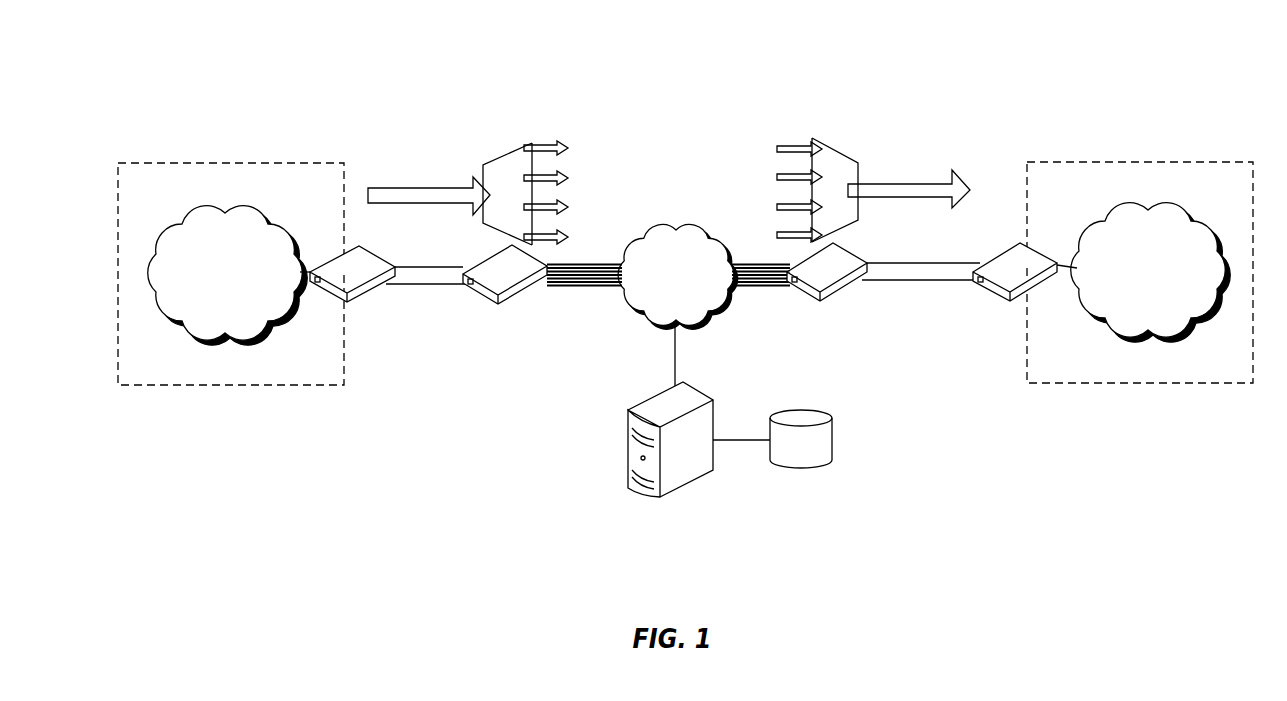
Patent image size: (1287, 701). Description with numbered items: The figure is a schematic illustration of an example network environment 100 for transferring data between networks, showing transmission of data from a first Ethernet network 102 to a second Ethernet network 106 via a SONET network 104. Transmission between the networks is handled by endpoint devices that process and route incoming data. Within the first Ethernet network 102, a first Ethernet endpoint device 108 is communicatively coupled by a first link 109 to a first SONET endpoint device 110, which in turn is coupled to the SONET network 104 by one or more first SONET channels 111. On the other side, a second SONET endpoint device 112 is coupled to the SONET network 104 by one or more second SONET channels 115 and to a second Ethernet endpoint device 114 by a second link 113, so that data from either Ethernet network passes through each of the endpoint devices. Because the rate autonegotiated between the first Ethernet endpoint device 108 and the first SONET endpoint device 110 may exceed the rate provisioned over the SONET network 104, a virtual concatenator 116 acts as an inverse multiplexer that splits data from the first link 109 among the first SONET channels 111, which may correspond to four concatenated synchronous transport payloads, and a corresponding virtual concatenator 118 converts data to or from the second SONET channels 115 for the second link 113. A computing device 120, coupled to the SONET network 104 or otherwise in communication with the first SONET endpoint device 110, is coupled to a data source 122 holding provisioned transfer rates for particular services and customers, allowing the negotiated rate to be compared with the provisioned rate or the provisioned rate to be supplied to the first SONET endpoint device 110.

The network environment 100 is at (1008, 78).
The first Ethernet network 102 is at (235, 163).
The SONET network 104 is at (698, 227).
The second Ethernet network 106 is at (1203, 160).
The first Ethernet endpoint device 108 is at (350, 293).
The first link 109 is at (425, 276).
The first SONET endpoint device 110 is at (513, 293).
The first SONET channels 111 is at (580, 278).
The second SONET endpoint device 112 is at (827, 292).
The second link 113 is at (902, 273).
The second Ethernet endpoint device 114 is at (1007, 292).
The second SONET channels 115 is at (748, 278).
The virtual concatenator 116 is at (508, 170).
The virtual concatenator 118 is at (835, 162).
The computing device 120 is at (650, 395).
The data source 122 is at (798, 410).